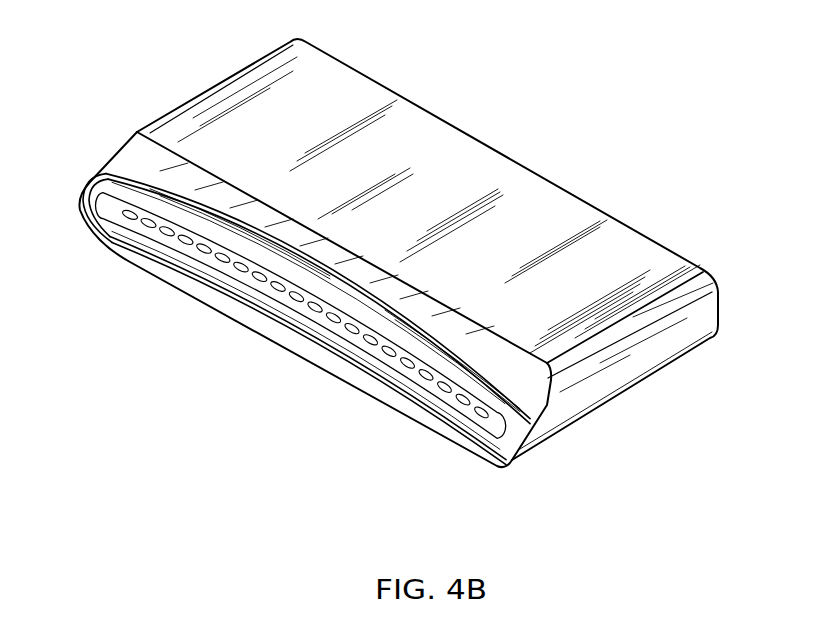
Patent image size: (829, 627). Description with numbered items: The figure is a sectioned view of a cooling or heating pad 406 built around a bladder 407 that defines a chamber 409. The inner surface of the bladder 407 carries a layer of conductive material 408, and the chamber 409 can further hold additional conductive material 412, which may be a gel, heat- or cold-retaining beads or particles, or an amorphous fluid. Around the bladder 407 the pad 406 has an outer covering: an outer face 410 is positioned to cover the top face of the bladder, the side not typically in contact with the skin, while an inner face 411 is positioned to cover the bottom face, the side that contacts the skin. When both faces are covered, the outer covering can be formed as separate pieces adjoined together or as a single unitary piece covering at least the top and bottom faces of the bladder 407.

The cooling or heating pad 406 is at (322, 392).
The bladder 407 is at (109, 186).
The layer of conductive material 408 is at (93, 238).
The chamber 409 is at (152, 238).
The outer face 410 is at (653, 258).
The inner face 411 is at (608, 387).
The additional conductive material 412 is at (258, 283).